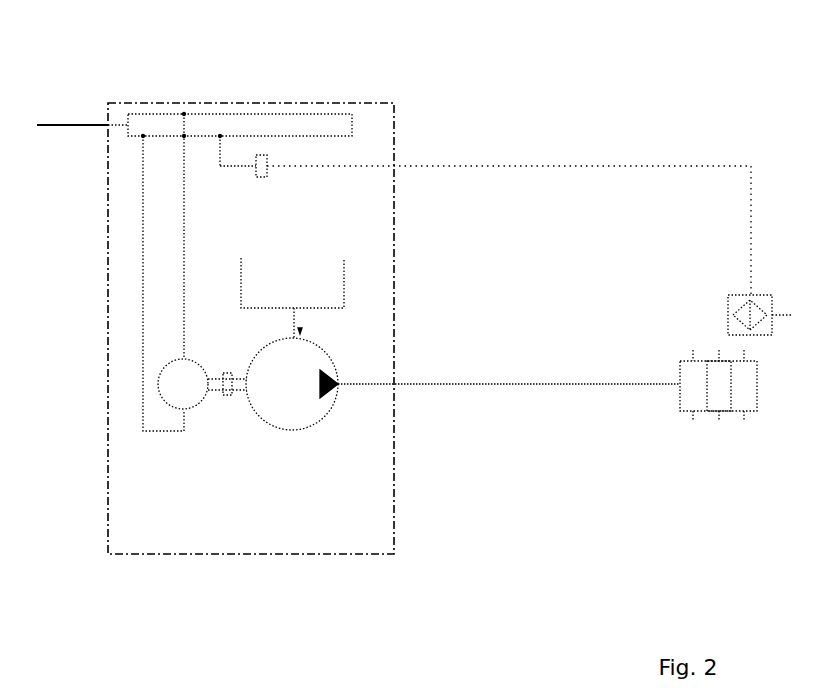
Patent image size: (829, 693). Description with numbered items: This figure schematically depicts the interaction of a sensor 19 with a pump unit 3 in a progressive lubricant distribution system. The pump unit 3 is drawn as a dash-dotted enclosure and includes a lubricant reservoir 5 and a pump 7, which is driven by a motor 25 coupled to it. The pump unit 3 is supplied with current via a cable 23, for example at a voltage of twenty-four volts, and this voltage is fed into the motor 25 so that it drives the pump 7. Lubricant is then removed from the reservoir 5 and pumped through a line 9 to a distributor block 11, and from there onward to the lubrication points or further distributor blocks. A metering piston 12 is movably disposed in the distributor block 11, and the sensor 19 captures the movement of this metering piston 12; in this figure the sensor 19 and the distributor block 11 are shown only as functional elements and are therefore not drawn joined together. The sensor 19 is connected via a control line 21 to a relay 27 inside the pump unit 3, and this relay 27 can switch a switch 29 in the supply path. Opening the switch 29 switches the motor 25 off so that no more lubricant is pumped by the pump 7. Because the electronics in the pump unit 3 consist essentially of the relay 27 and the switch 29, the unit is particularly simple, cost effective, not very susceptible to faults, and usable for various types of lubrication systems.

The pump unit 3 is at (393, 105).
The lubricant reservoir 5 is at (333, 283).
The pump 7 is at (300, 408).
The line 9 is at (502, 384).
The distributor block 11 is at (688, 398).
The metering piston 12 is at (717, 395).
The sensor 19 is at (731, 302).
The control line 21 is at (578, 167).
The cable 23 is at (62, 125).
The motor 25 is at (168, 388).
The relay 27 is at (262, 160).
The switch 29 is at (186, 231).